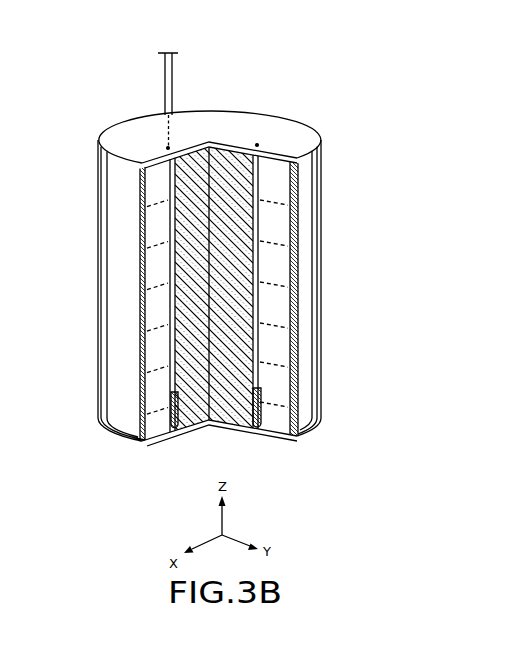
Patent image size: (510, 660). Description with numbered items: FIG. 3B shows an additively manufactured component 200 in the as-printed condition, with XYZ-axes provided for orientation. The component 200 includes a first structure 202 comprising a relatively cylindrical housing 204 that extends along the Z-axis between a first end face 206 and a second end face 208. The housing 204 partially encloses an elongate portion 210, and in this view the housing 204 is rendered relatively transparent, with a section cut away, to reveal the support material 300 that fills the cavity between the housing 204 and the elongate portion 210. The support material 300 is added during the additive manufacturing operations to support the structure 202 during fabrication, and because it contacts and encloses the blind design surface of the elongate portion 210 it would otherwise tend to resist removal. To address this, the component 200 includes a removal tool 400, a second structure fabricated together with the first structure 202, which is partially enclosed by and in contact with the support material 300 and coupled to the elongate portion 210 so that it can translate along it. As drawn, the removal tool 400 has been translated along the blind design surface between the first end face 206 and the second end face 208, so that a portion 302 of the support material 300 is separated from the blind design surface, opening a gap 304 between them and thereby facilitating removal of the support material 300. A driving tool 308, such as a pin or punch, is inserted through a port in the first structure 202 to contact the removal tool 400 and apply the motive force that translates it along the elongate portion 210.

The additively manufactured component 200 is at (278, 84).
The first structure 202 is at (342, 160).
The housing 204 is at (100, 232).
The first end face 206 is at (100, 138).
The second end face 208 is at (118, 433).
The elongate portion 210 is at (242, 218).
The support material 300 is at (120, 287).
The portion of the support material 302 is at (158, 290).
The gap 304 is at (173, 317).
The driving tool 308 is at (172, 80).
The removal tool 400 is at (174, 420).